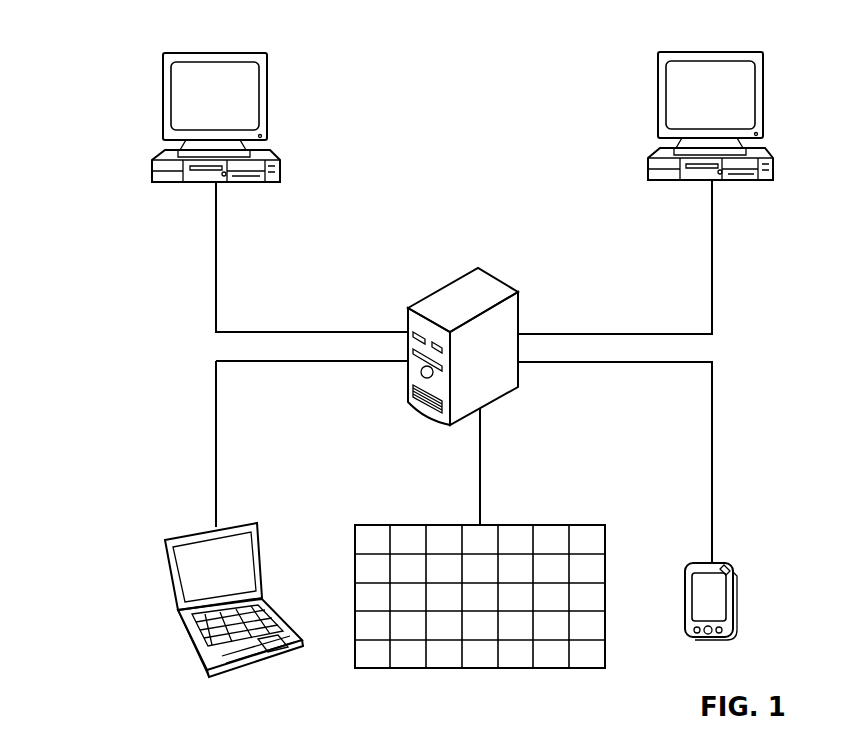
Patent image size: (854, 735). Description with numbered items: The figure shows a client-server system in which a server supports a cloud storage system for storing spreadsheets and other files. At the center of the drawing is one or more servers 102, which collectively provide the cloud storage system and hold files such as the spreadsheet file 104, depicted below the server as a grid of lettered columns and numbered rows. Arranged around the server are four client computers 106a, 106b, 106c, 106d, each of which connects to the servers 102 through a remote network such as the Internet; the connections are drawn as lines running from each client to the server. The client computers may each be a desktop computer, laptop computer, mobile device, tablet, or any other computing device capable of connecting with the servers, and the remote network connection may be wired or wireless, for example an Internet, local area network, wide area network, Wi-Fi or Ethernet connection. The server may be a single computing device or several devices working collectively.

The server 102 is at (447, 286).
The spreadsheet file 104 is at (423, 525).
The client computer 106a is at (215, 52).
The client computer 106b is at (708, 52).
The client computer 106c is at (198, 532).
The client computer 106d is at (701, 562).